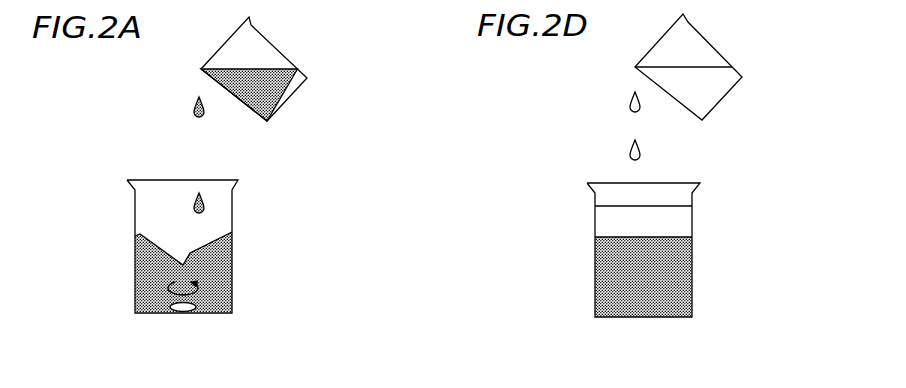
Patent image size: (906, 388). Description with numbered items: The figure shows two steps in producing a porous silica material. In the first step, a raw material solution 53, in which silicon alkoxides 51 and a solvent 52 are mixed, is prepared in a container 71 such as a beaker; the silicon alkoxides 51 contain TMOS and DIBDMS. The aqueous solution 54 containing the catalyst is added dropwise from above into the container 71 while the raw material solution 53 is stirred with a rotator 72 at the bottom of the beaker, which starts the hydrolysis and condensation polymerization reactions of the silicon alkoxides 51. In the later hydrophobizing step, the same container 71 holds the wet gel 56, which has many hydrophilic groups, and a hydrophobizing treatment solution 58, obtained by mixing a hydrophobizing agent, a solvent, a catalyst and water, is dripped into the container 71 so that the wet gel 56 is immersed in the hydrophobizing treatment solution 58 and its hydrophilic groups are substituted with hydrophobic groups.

In FIG. 2A, the aqueous solution containing the catalyst 54 is at (270, 73).
In FIG. 2A, the container 71 is at (232, 213).
In FIG. 2D, the container 71 is at (595, 218).
In FIG. 2A, the silicon alkoxides 51 is at (217, 259).
In FIG. 2A, the solvent 52 is at (217, 292).
In FIG. 2A, the raw material solution 53 is at (255, 272).
In FIG. 2A, the rotator 72 is at (186, 313).
In FIG. 2D, the hydrophobizing treatment solution 58 is at (705, 72).
In FIG. 2D, the wet gel 56 is at (610, 272).